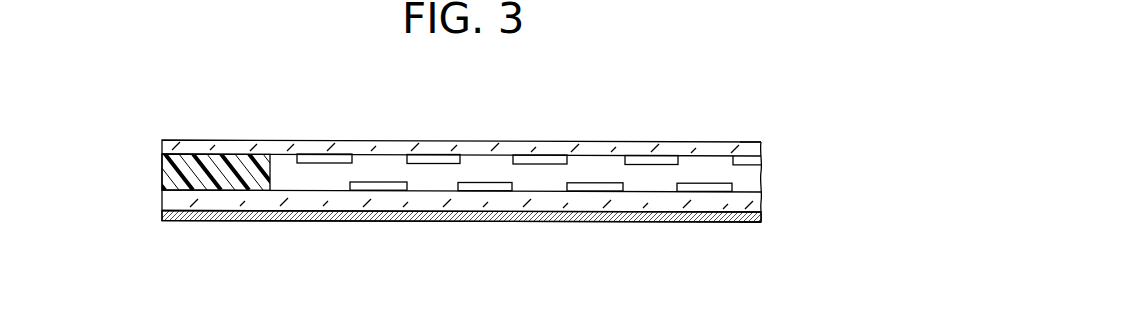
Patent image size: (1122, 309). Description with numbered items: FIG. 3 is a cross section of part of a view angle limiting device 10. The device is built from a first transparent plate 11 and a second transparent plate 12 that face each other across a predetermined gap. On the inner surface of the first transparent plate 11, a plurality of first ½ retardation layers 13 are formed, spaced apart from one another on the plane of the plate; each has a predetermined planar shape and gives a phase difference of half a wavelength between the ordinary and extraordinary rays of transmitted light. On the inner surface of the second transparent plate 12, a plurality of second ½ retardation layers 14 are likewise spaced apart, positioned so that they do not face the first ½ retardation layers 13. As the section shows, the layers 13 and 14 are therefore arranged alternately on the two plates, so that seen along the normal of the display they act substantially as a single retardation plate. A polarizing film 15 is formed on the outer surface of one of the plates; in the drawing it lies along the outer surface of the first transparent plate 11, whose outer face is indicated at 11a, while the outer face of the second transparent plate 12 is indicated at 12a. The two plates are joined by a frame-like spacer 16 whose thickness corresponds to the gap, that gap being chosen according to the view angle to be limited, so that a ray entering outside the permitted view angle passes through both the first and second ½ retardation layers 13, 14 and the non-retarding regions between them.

The view angle limiting device 10 is at (767, 131).
The first transparent plate 11 is at (503, 202).
The lower substrate surface 11a is at (758, 203).
The second transparent plate 12 is at (492, 148).
The upper substrate surface 12a is at (761, 150).
The first ½ retardation layers 13 is at (379, 190).
The second ½ retardation layers 14 is at (320, 158).
The polarizing film 15 is at (700, 222).
The frame-like spacer 16 is at (165, 172).